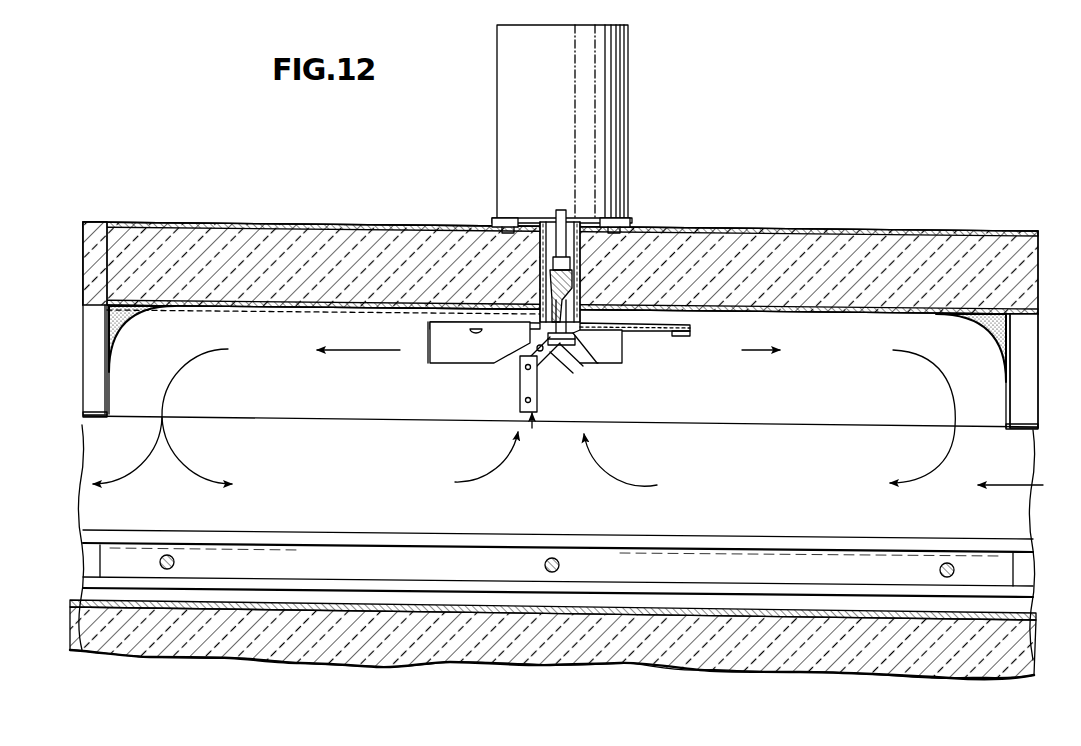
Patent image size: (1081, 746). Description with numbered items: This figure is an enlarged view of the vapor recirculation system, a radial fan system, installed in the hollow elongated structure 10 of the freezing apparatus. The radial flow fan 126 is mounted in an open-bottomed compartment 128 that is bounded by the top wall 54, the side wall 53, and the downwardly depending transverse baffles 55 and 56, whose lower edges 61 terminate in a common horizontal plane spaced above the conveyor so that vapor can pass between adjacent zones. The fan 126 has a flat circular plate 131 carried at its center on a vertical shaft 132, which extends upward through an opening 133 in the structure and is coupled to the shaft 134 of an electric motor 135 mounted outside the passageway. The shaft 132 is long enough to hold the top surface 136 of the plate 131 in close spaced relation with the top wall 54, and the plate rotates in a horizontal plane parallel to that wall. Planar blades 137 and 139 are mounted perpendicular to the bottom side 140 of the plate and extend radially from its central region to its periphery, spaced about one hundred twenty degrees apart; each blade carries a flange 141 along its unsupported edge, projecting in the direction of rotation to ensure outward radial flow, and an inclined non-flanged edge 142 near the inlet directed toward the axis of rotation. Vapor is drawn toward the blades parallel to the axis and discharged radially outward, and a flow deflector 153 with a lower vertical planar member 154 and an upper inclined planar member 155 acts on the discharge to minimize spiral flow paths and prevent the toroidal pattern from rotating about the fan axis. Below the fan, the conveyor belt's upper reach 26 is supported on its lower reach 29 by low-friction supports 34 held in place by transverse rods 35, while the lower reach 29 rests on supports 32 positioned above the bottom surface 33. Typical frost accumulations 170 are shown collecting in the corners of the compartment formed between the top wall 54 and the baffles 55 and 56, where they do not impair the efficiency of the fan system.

The hollow elongated structure 10 is at (161, 221).
The upper reach of the belt 26 is at (363, 536).
The lower reach of the belt 29 is at (422, 585).
The supports 32 is at (719, 603).
The bottom surface 33 is at (905, 613).
The supports 34 is at (558, 564).
The transverse rods 35 is at (560, 565).
The side wall 53 is at (856, 333).
The top wall 54 is at (290, 318).
The baffle 55 is at (107, 368).
The baffle 56 is at (1012, 370).
The lower edges of the baffles 61 is at (84, 426).
The radial flow fan 126 is at (420, 358).
The compartment 128 is at (563, 417).
The flat circular plate 131 is at (690, 328).
The shaft 132 is at (557, 298).
The opening 133 is at (573, 285).
The motor shaft 134 is at (559, 219).
The electric motor 135 is at (622, 88).
The top surface of the plate 136 is at (430, 321).
The blade 137 is at (462, 353).
The blade 139 is at (612, 353).
The bottom side of the plate 140 is at (680, 330).
The flange 141 is at (430, 365).
The non-flanged edge 142 is at (515, 356).
The flow deflector 153 is at (530, 415).
The lower planar member 154 is at (522, 397).
The upper planar member 155 is at (525, 350).
The frost accumulations 170 is at (132, 326).